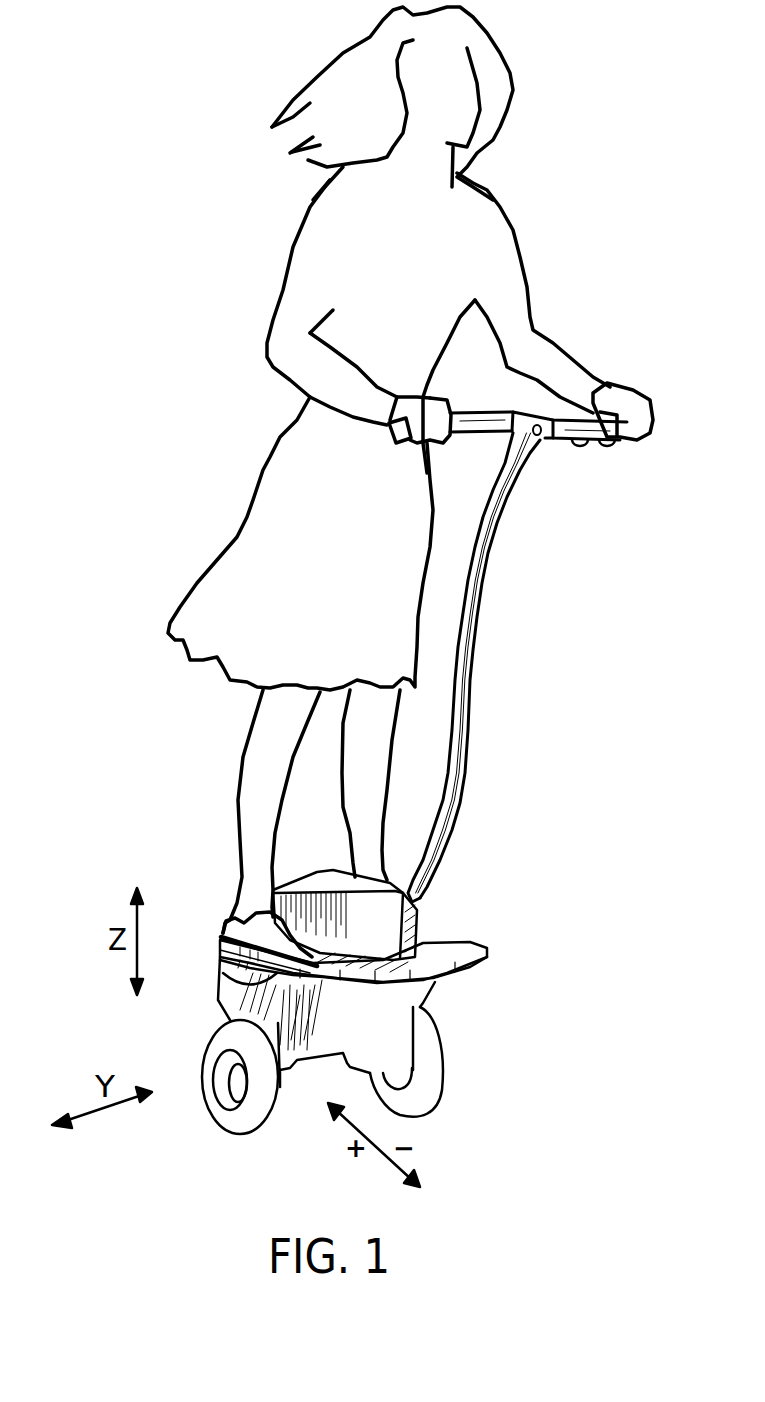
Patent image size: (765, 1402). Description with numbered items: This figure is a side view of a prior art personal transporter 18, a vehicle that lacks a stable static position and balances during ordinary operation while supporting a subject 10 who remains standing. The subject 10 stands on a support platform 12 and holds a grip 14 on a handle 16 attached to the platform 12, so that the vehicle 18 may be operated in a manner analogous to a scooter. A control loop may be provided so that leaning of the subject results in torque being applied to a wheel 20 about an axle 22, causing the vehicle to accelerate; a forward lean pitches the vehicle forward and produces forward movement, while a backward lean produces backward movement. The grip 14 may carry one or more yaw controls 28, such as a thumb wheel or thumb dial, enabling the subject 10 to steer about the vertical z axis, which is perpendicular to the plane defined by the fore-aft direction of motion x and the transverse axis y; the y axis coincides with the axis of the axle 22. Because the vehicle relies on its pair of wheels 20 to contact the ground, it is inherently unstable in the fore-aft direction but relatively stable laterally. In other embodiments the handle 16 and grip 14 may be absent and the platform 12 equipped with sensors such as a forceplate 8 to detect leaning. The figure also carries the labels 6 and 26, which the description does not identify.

The ground-contacting module 6 is at (634, 918).
The forceplate 8 is at (222, 940).
The subject 10 is at (490, 207).
The support platform 12 is at (467, 970).
The grip 14 is at (543, 433).
The handle 16 is at (480, 633).
The personal transporter 18 is at (108, 447).
The wheel 20 is at (247, 1127).
The axle 22 is at (237, 1080).
The fore-aft direction 26 is at (502, 1027).
The yaw controls 28 is at (583, 445).